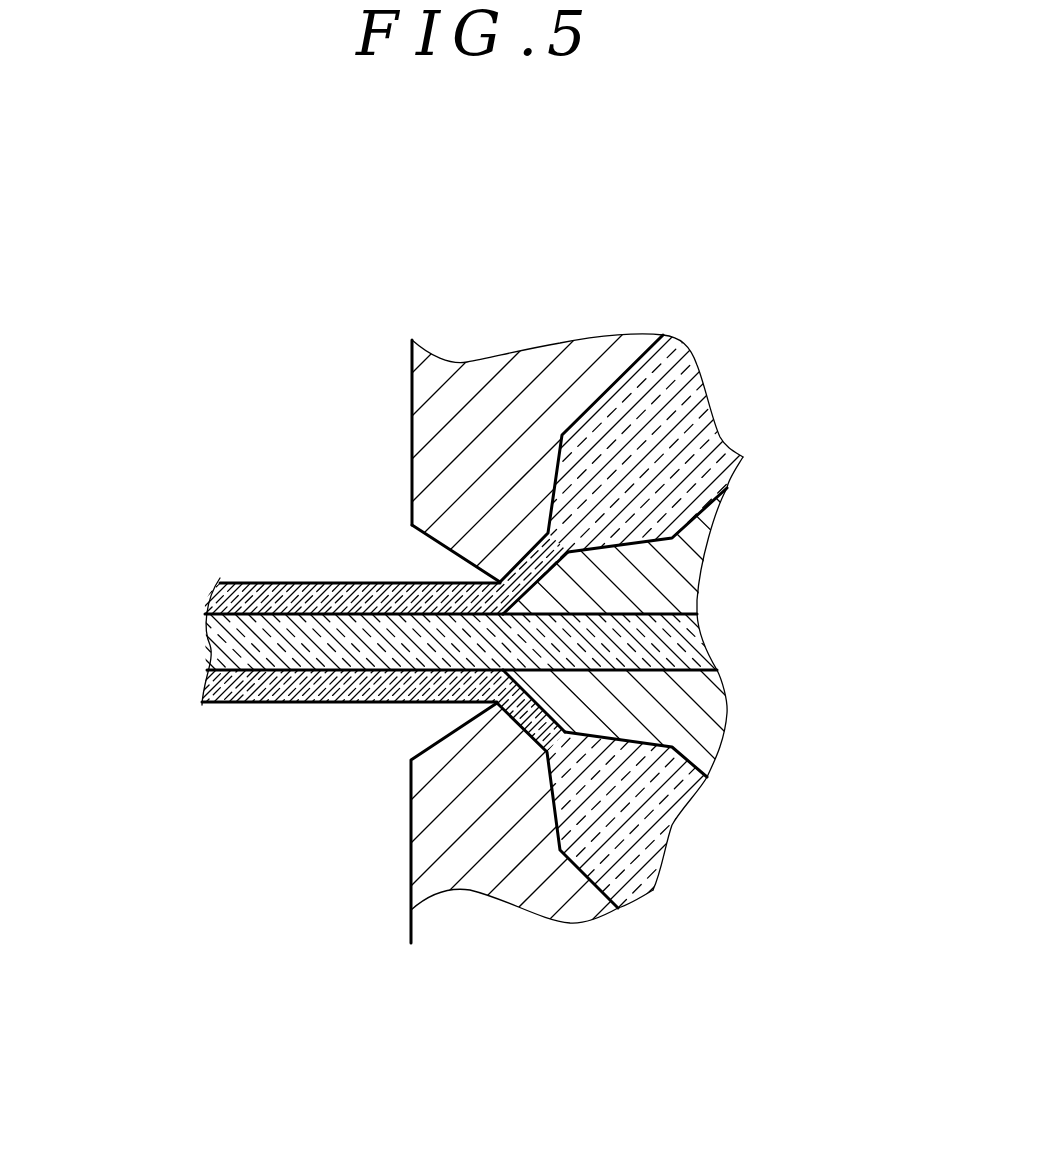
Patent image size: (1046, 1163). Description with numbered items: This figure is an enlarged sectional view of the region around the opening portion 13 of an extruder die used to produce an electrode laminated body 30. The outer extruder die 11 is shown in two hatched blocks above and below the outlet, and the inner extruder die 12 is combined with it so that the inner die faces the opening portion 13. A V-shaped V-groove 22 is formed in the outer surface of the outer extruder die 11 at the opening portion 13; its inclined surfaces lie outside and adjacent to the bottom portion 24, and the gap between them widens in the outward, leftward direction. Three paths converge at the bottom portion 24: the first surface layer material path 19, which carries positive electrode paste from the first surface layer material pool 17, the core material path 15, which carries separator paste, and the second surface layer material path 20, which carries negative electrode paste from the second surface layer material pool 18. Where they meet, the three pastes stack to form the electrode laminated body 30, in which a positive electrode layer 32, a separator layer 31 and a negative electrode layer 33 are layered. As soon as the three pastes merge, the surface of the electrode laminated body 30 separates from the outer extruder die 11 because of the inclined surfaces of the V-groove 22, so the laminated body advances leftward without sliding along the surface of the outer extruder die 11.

The outer extruder die 11 is at (463, 392).
The inner extruder die 12 is at (663, 569).
The opening portion 13 is at (412, 551).
The core material path 15 is at (560, 640).
The first surface layer material pool 17 is at (650, 445).
The second surface layer material pool 18 is at (612, 822).
The first surface layer material path 19 is at (504, 628).
The second surface layer material path 20 is at (435, 805).
The V-groove 22 is at (463, 563).
The bottom portion 24 is at (498, 583).
The electrode laminated body 30 is at (314, 705).
The separator layer 31 is at (232, 642).
The positive electrode layer 32 is at (228, 600).
The negative electrode layer 33 is at (243, 687).